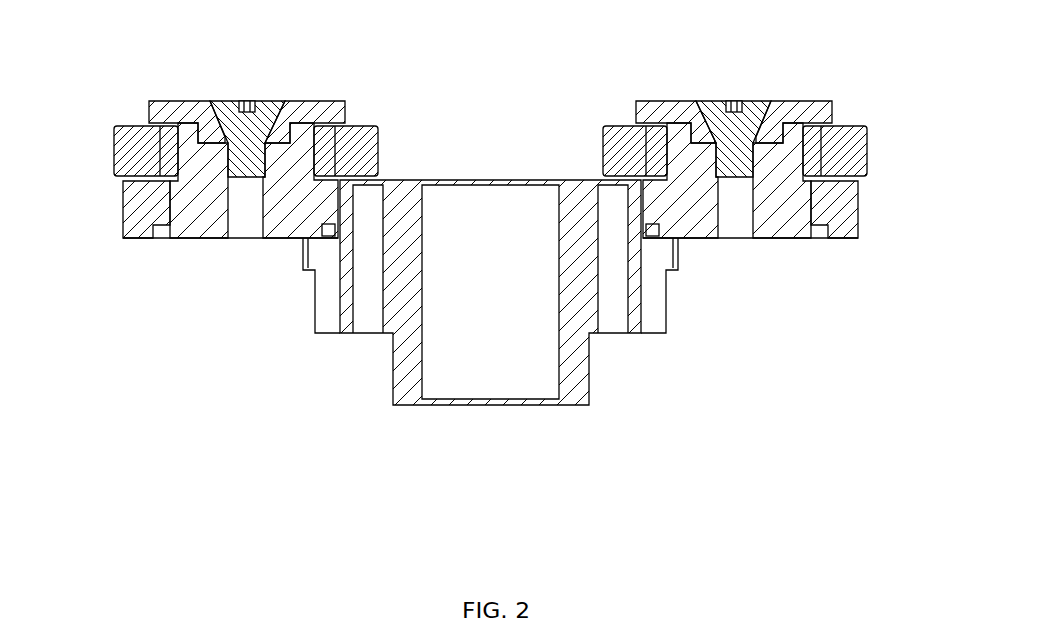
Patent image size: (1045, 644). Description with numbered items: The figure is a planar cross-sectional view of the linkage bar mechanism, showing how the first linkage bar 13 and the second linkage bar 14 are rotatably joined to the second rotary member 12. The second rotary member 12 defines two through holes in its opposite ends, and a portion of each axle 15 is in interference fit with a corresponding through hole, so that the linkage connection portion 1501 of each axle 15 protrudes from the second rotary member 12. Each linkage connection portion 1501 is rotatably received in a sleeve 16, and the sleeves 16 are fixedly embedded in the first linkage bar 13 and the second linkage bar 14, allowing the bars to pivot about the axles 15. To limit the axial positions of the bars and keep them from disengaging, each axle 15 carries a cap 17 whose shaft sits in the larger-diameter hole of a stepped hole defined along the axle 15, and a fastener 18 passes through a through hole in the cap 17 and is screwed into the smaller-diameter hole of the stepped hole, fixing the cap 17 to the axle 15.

The second rotary member 12 is at (857, 212).
The first linkage bar 13 is at (114, 143).
The second linkage bar 14 is at (867, 152).
The axle 15 is at (192, 239).
The linkage connection portion 1501 is at (160, 150).
The sleeve 16 is at (336, 150).
The cap 17 is at (176, 102).
The fastener 18 is at (268, 101).